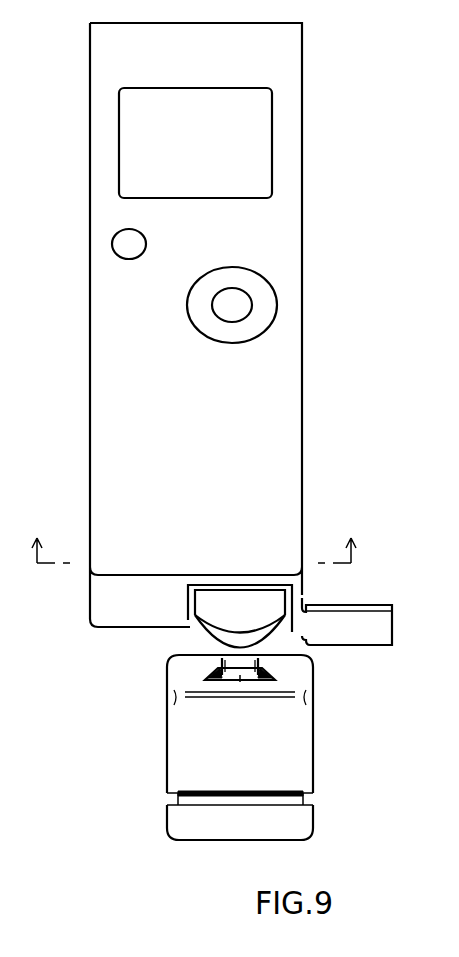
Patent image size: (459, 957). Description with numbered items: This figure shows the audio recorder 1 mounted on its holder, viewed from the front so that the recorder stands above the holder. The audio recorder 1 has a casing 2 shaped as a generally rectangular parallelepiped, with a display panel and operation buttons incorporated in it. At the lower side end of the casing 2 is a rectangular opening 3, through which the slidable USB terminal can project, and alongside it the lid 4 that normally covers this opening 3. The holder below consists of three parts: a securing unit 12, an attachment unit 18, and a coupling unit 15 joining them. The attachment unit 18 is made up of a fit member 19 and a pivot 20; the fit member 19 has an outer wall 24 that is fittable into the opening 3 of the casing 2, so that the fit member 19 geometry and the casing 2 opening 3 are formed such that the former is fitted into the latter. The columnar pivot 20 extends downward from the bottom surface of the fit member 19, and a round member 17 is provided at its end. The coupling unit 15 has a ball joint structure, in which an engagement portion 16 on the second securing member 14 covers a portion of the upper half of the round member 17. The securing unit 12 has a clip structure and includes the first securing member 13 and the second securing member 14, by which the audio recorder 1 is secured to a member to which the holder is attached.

The audio recorder 1 is at (318, 152).
The casing 2 is at (302, 314).
The opening 3 is at (190, 598).
The lid 4 is at (380, 603).
The securing unit 12 is at (288, 747).
The first securing member 13 is at (313, 820).
The second securing member 14 is at (313, 772).
The coupling unit 15 is at (307, 718).
The engagement portion 16 is at (268, 672).
The round member 17 is at (240, 680).
The attachment unit 18 is at (316, 677).
The fit member 19 is at (283, 647).
The pivot 20 is at (258, 662).
The outer wall 24 is at (190, 615).